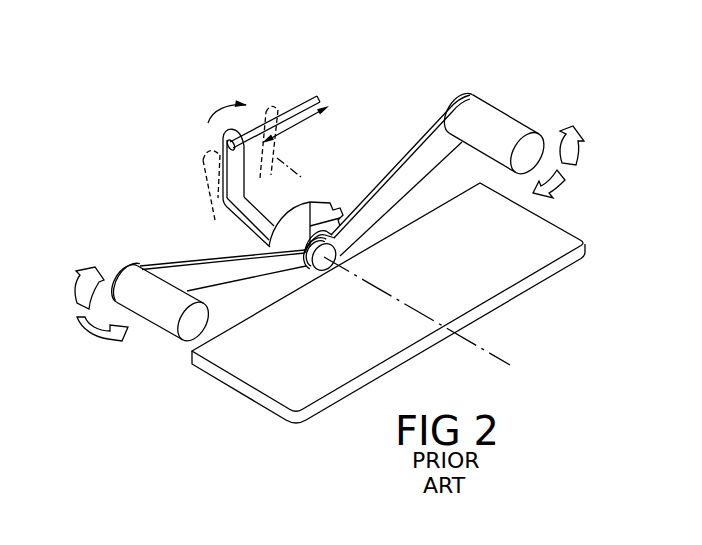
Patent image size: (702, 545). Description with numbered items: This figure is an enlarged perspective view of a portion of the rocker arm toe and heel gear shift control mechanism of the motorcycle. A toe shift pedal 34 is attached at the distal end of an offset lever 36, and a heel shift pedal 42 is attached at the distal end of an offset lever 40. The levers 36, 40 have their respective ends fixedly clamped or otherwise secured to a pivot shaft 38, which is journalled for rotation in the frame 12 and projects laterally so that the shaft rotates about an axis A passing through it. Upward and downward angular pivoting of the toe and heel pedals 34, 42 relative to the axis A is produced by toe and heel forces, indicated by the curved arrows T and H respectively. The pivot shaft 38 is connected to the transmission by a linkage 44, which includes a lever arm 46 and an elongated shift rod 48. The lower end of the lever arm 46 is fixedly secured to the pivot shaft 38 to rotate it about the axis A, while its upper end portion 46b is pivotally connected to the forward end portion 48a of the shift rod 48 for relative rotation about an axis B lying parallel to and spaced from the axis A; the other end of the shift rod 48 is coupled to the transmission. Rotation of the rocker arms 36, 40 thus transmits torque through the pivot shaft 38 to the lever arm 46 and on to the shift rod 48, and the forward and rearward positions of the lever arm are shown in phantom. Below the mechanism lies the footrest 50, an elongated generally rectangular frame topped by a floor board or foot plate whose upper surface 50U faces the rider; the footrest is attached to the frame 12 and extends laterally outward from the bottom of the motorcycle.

The frame 12 is at (272, 247).
The shift pedal 34 is at (136, 265).
The offset lever 36 is at (208, 272).
The pivot shaft 38 is at (310, 202).
The offset lever 40 is at (475, 128).
The shift pedal 42 is at (494, 130).
The linkage 44 is at (181, 125).
The lever arm 46 is at (210, 186).
The upper end portion 46b is at (229, 164).
The shift rod 48 is at (296, 98).
The forward end portion 48a is at (286, 112).
The footrest 50 is at (184, 371).
The upper surface 50U is at (284, 392).
The axis A is at (487, 350).
The axis B is at (293, 162).
The heel forces arrow H is at (580, 133).
The toe forces arrow T is at (112, 340).